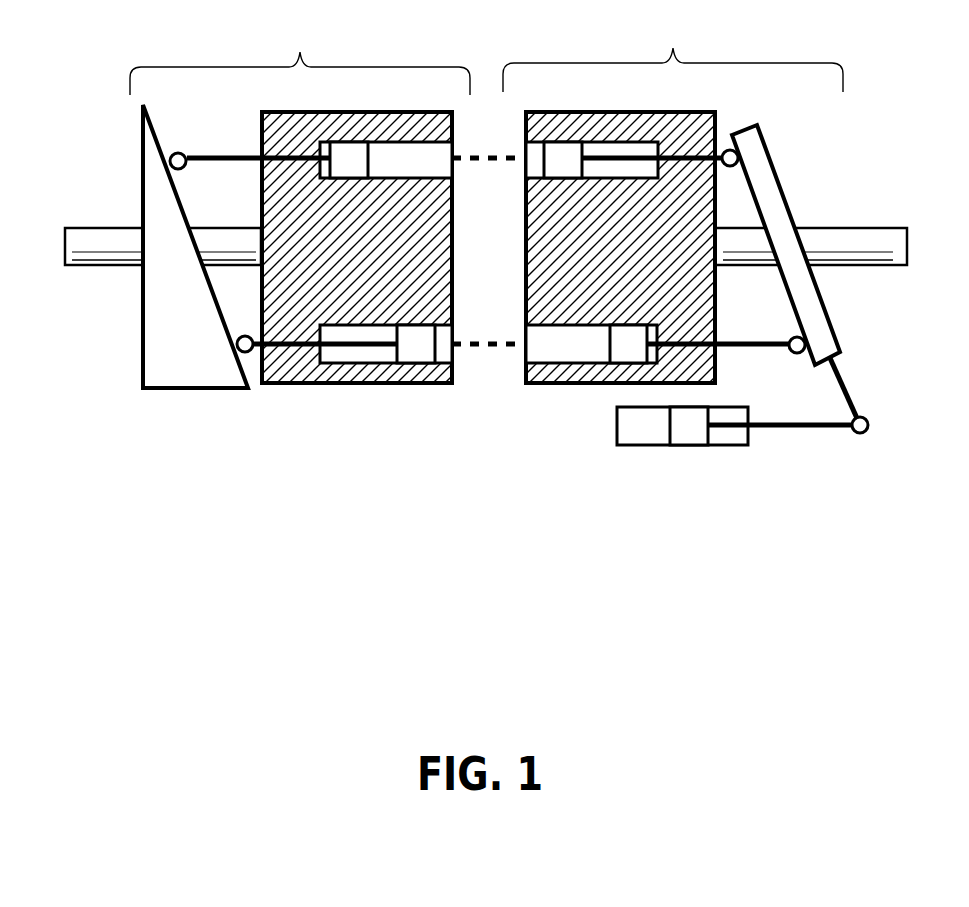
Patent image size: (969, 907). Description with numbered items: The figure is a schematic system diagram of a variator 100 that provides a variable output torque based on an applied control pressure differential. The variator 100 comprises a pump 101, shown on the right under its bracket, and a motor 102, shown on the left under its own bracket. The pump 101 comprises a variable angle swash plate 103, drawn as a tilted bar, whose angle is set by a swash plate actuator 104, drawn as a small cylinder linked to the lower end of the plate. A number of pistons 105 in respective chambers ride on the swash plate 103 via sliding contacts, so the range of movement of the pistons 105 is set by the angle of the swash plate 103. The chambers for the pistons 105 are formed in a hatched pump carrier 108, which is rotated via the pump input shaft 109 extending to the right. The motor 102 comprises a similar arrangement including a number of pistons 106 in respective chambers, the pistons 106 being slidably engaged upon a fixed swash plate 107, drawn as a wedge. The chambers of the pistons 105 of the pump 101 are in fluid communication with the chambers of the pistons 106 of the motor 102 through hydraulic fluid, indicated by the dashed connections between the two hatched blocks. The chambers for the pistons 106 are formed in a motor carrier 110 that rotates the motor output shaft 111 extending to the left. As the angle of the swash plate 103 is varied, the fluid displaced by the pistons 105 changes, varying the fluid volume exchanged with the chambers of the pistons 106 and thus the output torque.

The variator 100 is at (577, 590).
The pump 101 is at (673, 50).
The motor 102 is at (300, 51).
The variable angle swash plate 103 is at (810, 303).
The swash plate actuator 104 is at (700, 455).
The pistons 105 is at (568, 172).
The pistons 106 is at (360, 170).
The fixed swash plate 107 is at (205, 378).
The pump carrier 108 is at (558, 387).
The pump input shaft 109 is at (875, 240).
The motor carrier 110 is at (410, 375).
The motor output shaft 111 is at (80, 238).